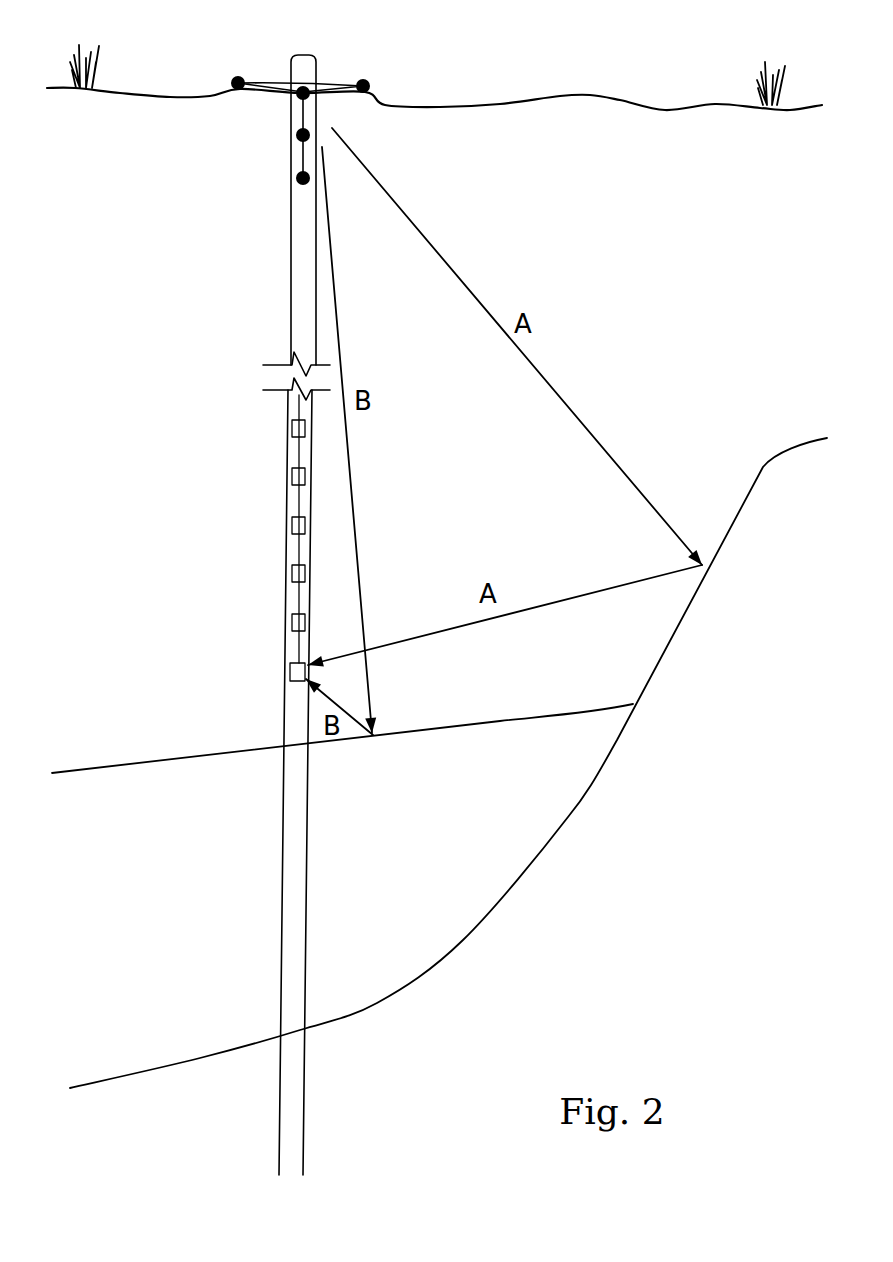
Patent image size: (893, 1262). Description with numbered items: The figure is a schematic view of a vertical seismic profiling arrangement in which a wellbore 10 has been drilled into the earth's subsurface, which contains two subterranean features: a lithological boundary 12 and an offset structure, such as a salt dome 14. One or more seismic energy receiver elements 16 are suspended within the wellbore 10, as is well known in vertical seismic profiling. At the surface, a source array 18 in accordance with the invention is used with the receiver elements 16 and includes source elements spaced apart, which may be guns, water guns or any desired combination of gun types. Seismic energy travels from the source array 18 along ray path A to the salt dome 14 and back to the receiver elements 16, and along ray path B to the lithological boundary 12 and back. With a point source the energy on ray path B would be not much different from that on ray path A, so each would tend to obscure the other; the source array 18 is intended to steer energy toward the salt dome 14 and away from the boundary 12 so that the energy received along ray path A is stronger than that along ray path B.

The wellbore 10 is at (289, 257).
The lithological boundary 12 is at (109, 765).
The salt dome 14 is at (568, 817).
The seismic energy receiver elements 16 is at (298, 529).
The source array 18 is at (227, 56).